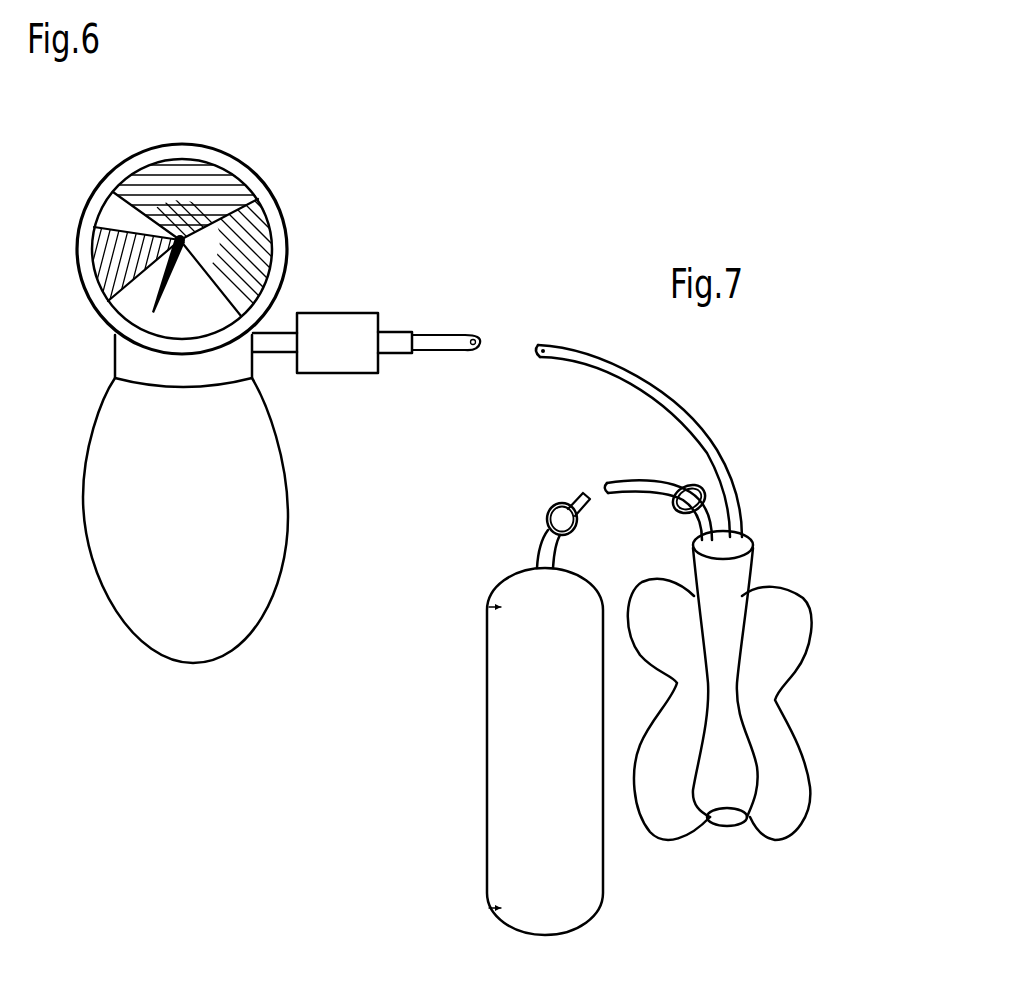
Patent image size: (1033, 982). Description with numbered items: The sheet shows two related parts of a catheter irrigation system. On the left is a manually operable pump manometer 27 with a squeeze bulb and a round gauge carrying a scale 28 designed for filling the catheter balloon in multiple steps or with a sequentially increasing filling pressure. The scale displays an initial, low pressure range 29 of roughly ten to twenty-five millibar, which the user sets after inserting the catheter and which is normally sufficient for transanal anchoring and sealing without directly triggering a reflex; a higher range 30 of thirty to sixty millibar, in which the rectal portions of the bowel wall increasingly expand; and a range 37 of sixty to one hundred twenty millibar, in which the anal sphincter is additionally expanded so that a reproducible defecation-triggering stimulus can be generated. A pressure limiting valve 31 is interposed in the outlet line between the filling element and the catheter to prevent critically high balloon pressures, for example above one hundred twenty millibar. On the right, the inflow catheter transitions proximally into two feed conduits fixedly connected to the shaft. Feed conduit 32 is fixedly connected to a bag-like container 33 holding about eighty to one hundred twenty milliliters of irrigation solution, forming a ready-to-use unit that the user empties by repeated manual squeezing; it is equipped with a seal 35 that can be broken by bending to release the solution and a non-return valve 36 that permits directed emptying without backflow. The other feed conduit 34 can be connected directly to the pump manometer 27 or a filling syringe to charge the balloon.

In FIG. 6, the pump manometer 27 is at (293, 135).
In FIG. 6, the scale 28 is at (240, 276).
In FIG. 6, the initial, low pressure range 29 is at (132, 258).
In FIG. 6, the pressure range 30 is at (203, 192).
In FIG. 6, the pressure limiting valve 31 is at (343, 333).
In FIG. 6, the pressure range 37 is at (257, 238).
In FIG. 7, the feed conduit 32 is at (653, 477).
In FIG. 7, the bag-like container 33 is at (533, 757).
In FIG. 7, the feed conduit 34 is at (708, 443).
In FIG. 7, the seal 35 is at (547, 521).
In FIG. 7, the non-return valve 36 is at (703, 493).